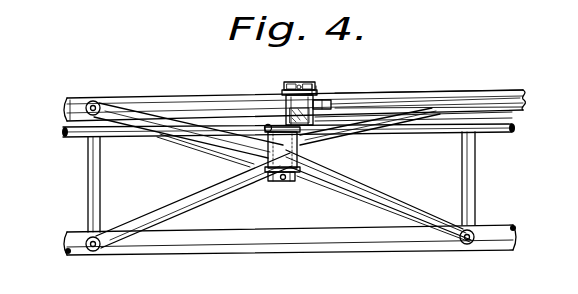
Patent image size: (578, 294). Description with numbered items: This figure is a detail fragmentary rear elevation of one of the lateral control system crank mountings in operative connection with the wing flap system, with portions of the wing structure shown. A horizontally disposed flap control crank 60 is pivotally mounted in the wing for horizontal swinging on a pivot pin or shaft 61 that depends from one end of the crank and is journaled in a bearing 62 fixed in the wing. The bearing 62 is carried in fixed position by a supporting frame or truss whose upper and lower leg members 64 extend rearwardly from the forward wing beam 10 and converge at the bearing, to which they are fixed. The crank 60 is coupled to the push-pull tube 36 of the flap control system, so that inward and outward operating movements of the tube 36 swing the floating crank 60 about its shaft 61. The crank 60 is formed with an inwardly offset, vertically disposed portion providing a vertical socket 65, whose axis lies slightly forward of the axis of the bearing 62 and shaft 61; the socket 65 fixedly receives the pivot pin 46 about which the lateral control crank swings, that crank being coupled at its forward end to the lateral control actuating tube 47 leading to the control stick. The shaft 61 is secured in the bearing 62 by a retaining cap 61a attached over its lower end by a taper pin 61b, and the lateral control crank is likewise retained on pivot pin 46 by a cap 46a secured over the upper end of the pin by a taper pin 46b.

The forward wing beam 10 is at (167, 105).
The push-pull tube 36 is at (68, 140).
The pivot pin 46 is at (336, 100).
The cap 46a is at (316, 84).
The taper pin 46b is at (298, 83).
The lateral control actuating tube 47 is at (397, 101).
The crank 60 is at (256, 119).
The pivot pin 61 is at (217, 161).
The retaining cap 61a is at (275, 182).
The taper pin 61b is at (284, 179).
The bearing 62 is at (264, 172).
The leg members 64 is at (332, 169).
The vertical socket 65 is at (284, 98).